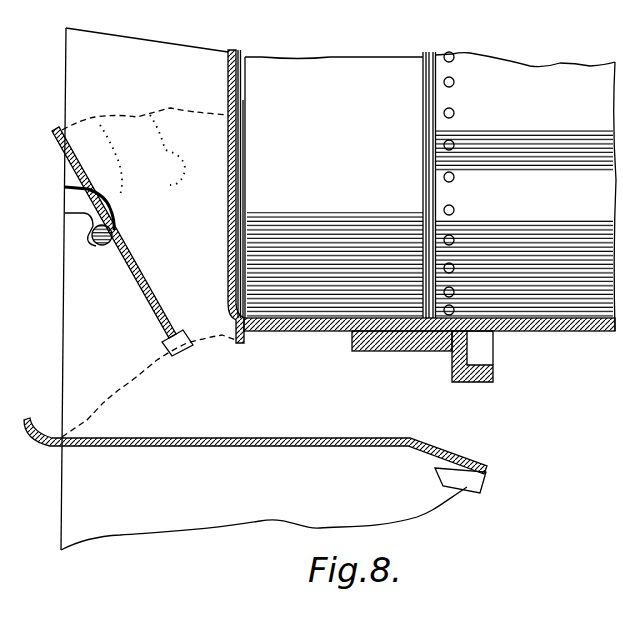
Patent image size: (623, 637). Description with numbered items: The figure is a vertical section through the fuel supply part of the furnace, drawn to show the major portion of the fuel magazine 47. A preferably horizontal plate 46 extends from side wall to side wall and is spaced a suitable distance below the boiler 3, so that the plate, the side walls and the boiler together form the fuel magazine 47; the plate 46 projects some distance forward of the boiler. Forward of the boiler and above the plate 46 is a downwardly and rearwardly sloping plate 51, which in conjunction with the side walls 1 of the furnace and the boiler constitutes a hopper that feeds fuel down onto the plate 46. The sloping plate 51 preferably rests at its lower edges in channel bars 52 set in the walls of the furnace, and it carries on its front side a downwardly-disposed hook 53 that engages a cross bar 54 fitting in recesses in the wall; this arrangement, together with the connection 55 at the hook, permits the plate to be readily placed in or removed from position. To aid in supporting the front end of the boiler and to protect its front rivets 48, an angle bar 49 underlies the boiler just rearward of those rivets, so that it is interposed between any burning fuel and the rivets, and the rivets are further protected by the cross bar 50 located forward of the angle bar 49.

The wall 1 is at (263, 522).
The hopper 3 is at (422, 196).
The horizontal plate 46 is at (160, 446).
The fuel magazine 47 is at (149, 272).
The front rivets 48 is at (455, 179).
The angle bar 49 is at (493, 366).
The cross bar 50 is at (418, 352).
The sloping plate 51 is at (137, 279).
The channel bars 52 is at (162, 342).
The hook 53 is at (97, 218).
The cross bar 54 is at (91, 238).
The cable 55 is at (64, 186).